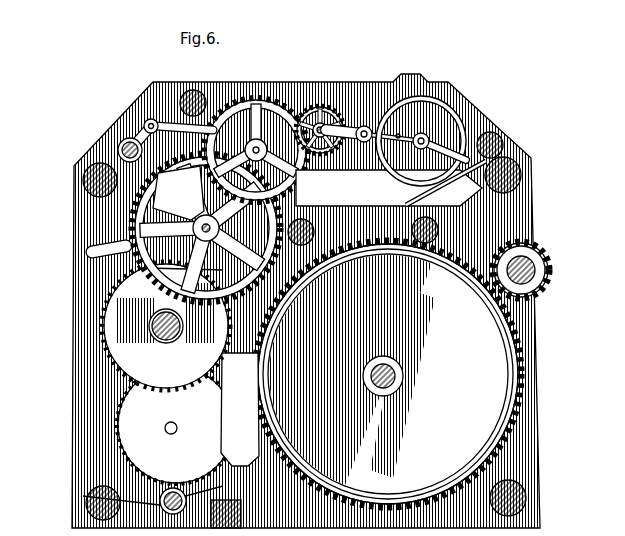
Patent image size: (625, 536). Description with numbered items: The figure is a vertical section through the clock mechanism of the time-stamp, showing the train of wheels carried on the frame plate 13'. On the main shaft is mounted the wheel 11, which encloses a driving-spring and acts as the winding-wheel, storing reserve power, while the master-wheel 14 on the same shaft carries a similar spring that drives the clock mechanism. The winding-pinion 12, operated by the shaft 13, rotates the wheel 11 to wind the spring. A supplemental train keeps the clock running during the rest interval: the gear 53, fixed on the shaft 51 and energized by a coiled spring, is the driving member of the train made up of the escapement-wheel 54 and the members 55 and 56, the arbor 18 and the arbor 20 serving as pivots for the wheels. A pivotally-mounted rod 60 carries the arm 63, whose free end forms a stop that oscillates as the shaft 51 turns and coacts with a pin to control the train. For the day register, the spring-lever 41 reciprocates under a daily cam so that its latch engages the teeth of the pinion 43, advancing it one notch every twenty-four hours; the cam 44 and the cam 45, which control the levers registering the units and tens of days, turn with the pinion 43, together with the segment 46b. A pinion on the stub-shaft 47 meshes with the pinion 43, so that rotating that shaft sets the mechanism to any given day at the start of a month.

The wheel 11 is at (486, 368).
The winding-pinion 12 is at (543, 263).
The shaft 13 is at (549, 259).
The frame plate 13' is at (321, 301).
The master-wheel 14 is at (386, 360).
The gear arbor 18 is at (196, 219).
The escape wheel arbor 20 is at (170, 324).
The spring-lever 41 is at (98, 243).
The pinion 43 is at (163, 305).
The cam 44 is at (166, 326).
The cam 45 is at (221, 409).
The segment disc 46b is at (176, 425).
The stub-shaft 47 is at (157, 420).
The shaft 51 is at (268, 92).
The gear 53 is at (296, 187).
The escapement-wheel 54 is at (320, 98).
The train member 55 is at (360, 112).
The train member 56 is at (418, 96).
The rod or shaft 60 is at (140, 114).
The arm 63 is at (181, 163).